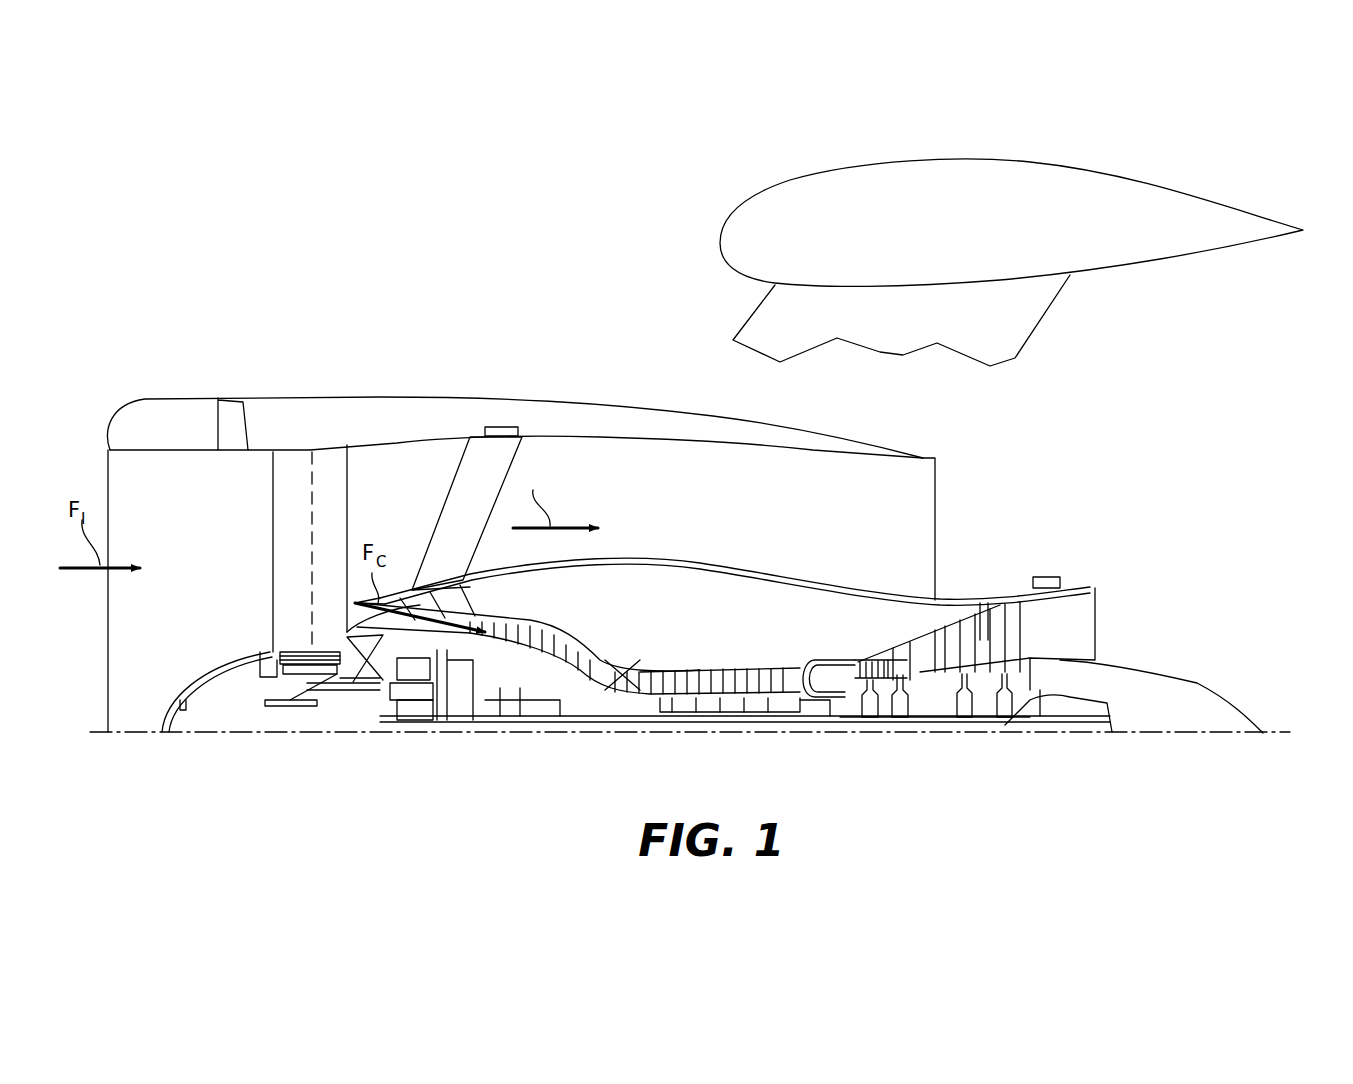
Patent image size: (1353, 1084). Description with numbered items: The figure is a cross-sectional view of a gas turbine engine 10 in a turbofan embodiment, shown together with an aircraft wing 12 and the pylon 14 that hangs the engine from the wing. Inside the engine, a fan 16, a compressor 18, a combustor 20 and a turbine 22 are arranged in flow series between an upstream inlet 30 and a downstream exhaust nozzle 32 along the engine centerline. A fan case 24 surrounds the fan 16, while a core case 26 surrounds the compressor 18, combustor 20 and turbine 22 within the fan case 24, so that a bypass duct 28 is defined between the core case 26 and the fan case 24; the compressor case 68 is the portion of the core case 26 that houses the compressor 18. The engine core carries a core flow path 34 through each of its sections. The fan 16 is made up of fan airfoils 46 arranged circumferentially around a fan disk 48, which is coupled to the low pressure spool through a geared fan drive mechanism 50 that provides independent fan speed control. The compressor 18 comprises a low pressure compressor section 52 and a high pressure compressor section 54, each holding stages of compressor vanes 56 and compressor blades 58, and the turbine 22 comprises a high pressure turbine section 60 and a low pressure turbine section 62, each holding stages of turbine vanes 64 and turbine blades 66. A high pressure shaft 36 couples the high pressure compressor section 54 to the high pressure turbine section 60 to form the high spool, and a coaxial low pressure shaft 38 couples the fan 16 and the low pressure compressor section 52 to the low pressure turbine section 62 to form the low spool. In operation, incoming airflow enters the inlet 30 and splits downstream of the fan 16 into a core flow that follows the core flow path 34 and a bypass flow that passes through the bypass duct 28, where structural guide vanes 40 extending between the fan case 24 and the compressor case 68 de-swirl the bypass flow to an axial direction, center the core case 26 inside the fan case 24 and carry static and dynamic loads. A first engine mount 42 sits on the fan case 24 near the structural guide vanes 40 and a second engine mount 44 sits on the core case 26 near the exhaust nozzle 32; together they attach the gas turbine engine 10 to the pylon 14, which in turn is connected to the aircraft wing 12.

The gas turbine engine 10 is at (318, 333).
The aircraft wing 12 is at (815, 210).
The pylon 14 is at (1013, 318).
The fan 16 is at (262, 607).
The compressor 18 is at (565, 676).
The combustor 20 is at (828, 692).
The turbine 22 is at (944, 695).
The fan case 24 is at (413, 405).
The core case 26 is at (640, 560).
The bypass duct 28 is at (617, 490).
The upstream inlet 30 is at (157, 529).
The downstream exhaust nozzle 32 is at (1103, 624).
The core flow path 34 is at (603, 655).
The high pressure shaft 36 is at (815, 713).
The low pressure shaft 38 is at (607, 725).
The structural guide vanes 40 is at (443, 534).
The first engine mount 42 is at (500, 427).
The second engine mount 44 is at (1050, 578).
The fan airfoils 46 is at (276, 501).
The fan disk 48 is at (283, 705).
The fan drive mechanism 50 is at (408, 708).
The low pressure compressor section 52 is at (536, 617).
The high pressure compressor section 54 is at (667, 675).
The compressor vanes 56 is at (570, 652).
The compressor blades 58 is at (646, 672).
The high pressure turbine section 60 is at (880, 658).
The low pressure turbine section 62 is at (985, 607).
The turbine vanes 64 is at (912, 660).
The turbine blades 66 is at (895, 663).
The compressor case 68 is at (497, 575).